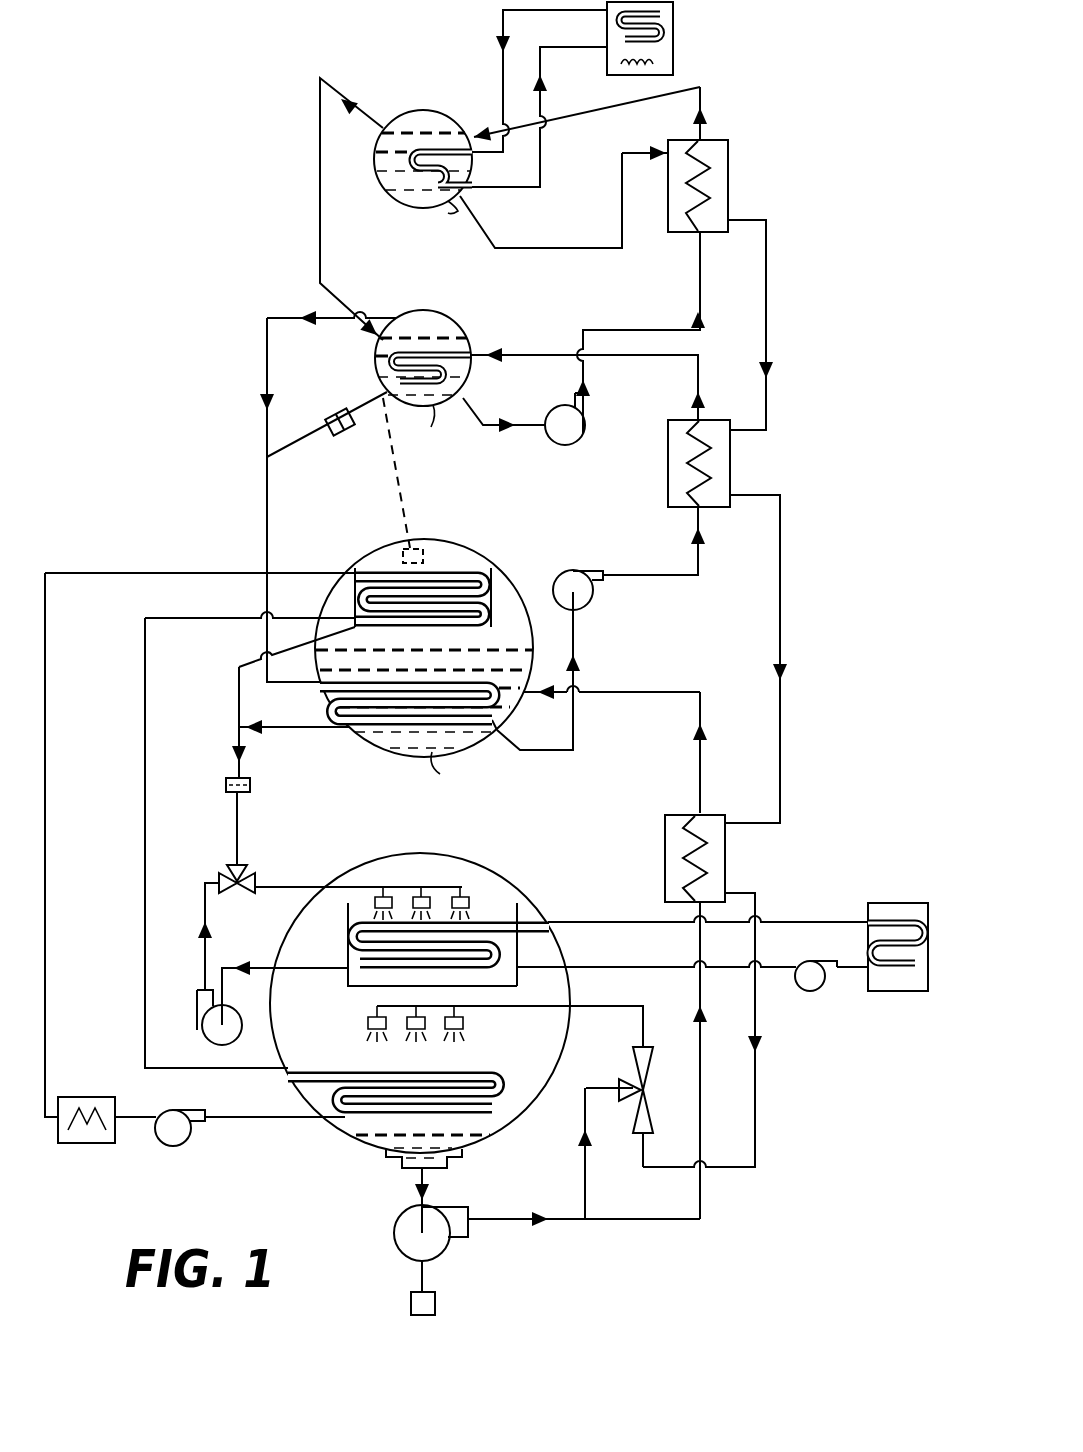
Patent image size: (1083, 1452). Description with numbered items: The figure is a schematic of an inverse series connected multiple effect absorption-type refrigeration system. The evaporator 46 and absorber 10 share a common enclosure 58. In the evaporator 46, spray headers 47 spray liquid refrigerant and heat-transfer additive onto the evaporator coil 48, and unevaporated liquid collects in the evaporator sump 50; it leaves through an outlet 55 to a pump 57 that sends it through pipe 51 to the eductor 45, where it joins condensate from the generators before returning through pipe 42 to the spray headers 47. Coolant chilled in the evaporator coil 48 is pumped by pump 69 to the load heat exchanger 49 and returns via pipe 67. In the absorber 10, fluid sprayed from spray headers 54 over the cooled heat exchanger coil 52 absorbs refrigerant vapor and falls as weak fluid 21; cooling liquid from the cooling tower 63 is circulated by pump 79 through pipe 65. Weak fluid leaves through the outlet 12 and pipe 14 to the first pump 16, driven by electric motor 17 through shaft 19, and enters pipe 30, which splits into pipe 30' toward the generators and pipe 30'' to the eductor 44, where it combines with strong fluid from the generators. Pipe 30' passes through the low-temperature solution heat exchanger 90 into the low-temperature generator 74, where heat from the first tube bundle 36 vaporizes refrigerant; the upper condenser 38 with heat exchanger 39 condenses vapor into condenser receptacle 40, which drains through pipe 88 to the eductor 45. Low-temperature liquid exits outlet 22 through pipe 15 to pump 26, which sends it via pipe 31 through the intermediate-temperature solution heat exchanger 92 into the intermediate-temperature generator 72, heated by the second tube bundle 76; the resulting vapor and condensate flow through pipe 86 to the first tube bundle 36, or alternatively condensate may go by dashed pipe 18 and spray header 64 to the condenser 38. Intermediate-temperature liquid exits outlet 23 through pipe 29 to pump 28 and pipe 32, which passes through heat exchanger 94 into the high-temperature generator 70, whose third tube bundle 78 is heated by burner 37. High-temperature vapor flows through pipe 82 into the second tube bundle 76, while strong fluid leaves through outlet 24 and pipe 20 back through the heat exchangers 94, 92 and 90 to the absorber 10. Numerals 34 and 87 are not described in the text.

The absorber 10 is at (306, 1022).
The outlet 12 is at (470, 1156).
The pipe 14 is at (432, 1180).
The pipe 15 is at (576, 729).
The first pump 16 is at (396, 1226).
The electric motor 17 is at (410, 1302).
The pipe 18 is at (397, 461).
The shaft 19 is at (426, 1275).
The pipe 20 is at (767, 334).
The weak fluid 21 is at (390, 1155).
The outlet 22 is at (508, 726).
The outlet 23 is at (472, 395).
The outlet 24 is at (460, 202).
The pump 26 is at (578, 574).
The pump 28 is at (582, 442).
The pipe 29 is at (520, 432).
The pipe 30 is at (584, 1238).
The pipe 30' is at (708, 1082).
The pipe 30'' is at (623, 1153).
The pipe 31 is at (711, 376).
The pipe 32 is at (602, 330).
The spray line 34 is at (628, 1012).
The first tube bundle 36 is at (451, 772).
The burner 37 is at (676, 42).
The condenser 38 is at (464, 567).
The heat exchanger 39 is at (480, 627).
The condenser receptacle 40 is at (346, 604).
The pipe 42 is at (284, 886).
The eductor 44 is at (658, 1088).
The eductor 45 is at (247, 864).
The evaporator 46 is at (484, 898).
The spray headers 47 is at (383, 893).
The evaporator coil 48 is at (502, 972).
The heat exchanger 49 is at (882, 904).
The evaporator sump 50 is at (552, 936).
The pipe 51 is at (200, 883).
The heat exchanger coil 52 is at (492, 1088).
The spray headers 54 is at (370, 1026).
The outlet 55 is at (340, 962).
The pump 57 is at (242, 1046).
The common enclosure 58 is at (538, 906).
The cooling tower 63 is at (92, 1146).
The spray header 64 is at (426, 544).
The pipe 65 is at (274, 1134).
The pipe 67 is at (802, 920).
The pump 69 is at (820, 992).
The high-temperature generator 70 is at (396, 103).
The intermediate-temperature generator 72 is at (390, 319).
The low-temperature generator 74 is at (348, 539).
The second tube bundle 76 is at (440, 430).
The third tube bundle 78 is at (434, 207).
The pump 79 is at (188, 1148).
The pipe 82 is at (320, 198).
The pipe 86 is at (262, 522).
The line 87 is at (249, 968).
The pipe 88 is at (224, 797).
The low-temperature solution heat exchanger 90 is at (729, 858).
The intermediate-temperature solution heat exchanger 92 is at (732, 468).
The heat exchanger 94 is at (729, 165).